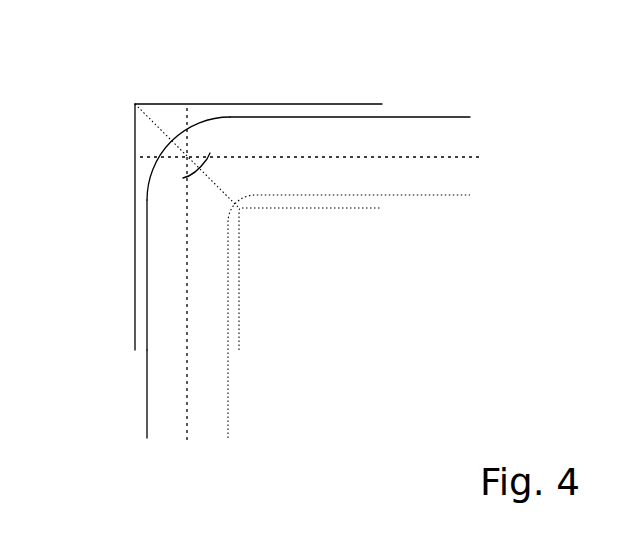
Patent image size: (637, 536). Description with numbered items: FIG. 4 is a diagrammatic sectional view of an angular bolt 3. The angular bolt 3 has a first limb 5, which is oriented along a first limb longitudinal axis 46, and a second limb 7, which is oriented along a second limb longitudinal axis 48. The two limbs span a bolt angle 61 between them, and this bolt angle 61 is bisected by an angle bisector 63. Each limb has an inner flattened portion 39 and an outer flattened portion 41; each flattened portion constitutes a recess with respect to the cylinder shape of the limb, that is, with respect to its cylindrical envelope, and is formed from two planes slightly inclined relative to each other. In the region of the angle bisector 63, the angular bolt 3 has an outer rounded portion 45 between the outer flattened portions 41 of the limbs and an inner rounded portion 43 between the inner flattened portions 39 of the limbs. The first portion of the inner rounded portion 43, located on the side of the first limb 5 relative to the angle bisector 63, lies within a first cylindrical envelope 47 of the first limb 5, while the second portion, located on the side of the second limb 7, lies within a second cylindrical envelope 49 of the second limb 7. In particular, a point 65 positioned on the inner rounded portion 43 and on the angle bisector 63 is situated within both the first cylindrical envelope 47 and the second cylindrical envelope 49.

The angular bolt 3 is at (90, 53).
The first limb 5 is at (460, 117).
The second limb 7 is at (147, 425).
The inner flattened portion 39 is at (415, 196).
The outer flattened portion 41 is at (417, 117).
The inner rounded portion 43 is at (239, 208).
The outer rounded portion 45 is at (170, 155).
The first limb longitudinal axis 46 is at (480, 157).
The first cylindrical envelope 47 is at (362, 104).
The second limb longitudinal axis 48 is at (187, 445).
The second cylindrical envelope 49 is at (134, 320).
The bolt angle 61 is at (207, 162).
The angle bisector 63 is at (150, 140).
The point 65 is at (250, 200).